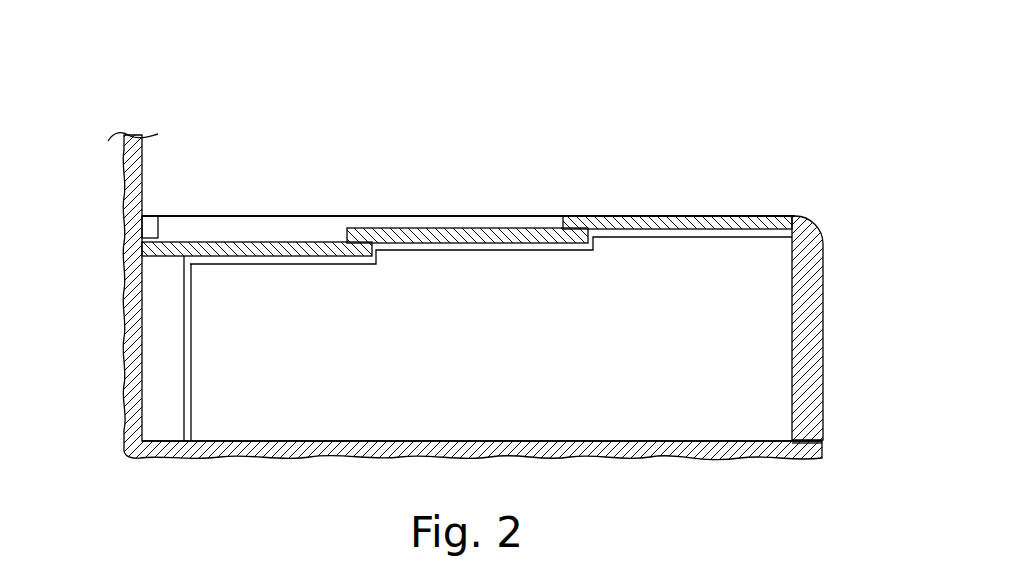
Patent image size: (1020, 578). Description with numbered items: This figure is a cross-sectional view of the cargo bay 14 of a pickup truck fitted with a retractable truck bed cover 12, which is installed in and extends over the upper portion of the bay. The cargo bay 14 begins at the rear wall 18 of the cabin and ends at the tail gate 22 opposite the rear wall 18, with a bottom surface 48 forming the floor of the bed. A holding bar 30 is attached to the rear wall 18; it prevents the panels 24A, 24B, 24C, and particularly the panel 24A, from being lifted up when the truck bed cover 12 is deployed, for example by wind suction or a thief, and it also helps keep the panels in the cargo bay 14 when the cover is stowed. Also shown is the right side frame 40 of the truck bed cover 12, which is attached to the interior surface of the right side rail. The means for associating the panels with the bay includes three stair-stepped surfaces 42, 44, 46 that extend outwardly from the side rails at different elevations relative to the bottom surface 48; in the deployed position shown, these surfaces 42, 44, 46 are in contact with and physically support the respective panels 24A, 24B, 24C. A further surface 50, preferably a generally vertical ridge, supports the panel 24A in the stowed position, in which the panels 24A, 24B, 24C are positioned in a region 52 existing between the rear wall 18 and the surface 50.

The cargo bay 14 is at (589, 46).
The retractable truck bed cover 12 is at (334, 224).
The rear wall 18 is at (142, 170).
The tail gate 22 is at (823, 318).
The panel 24A is at (277, 242).
The panel 24B is at (487, 228).
The panel 24C is at (727, 216).
The holding bar 30 is at (150, 218).
The right side frame 40 is at (603, 357).
The stair-stepped surface 42 is at (285, 265).
The stair-stepped surface 44 is at (517, 250).
The stair-stepped surface 46 is at (670, 237).
The bottom surface 48 is at (473, 442).
The surface 50 is at (192, 345).
The region 52 is at (155, 346).